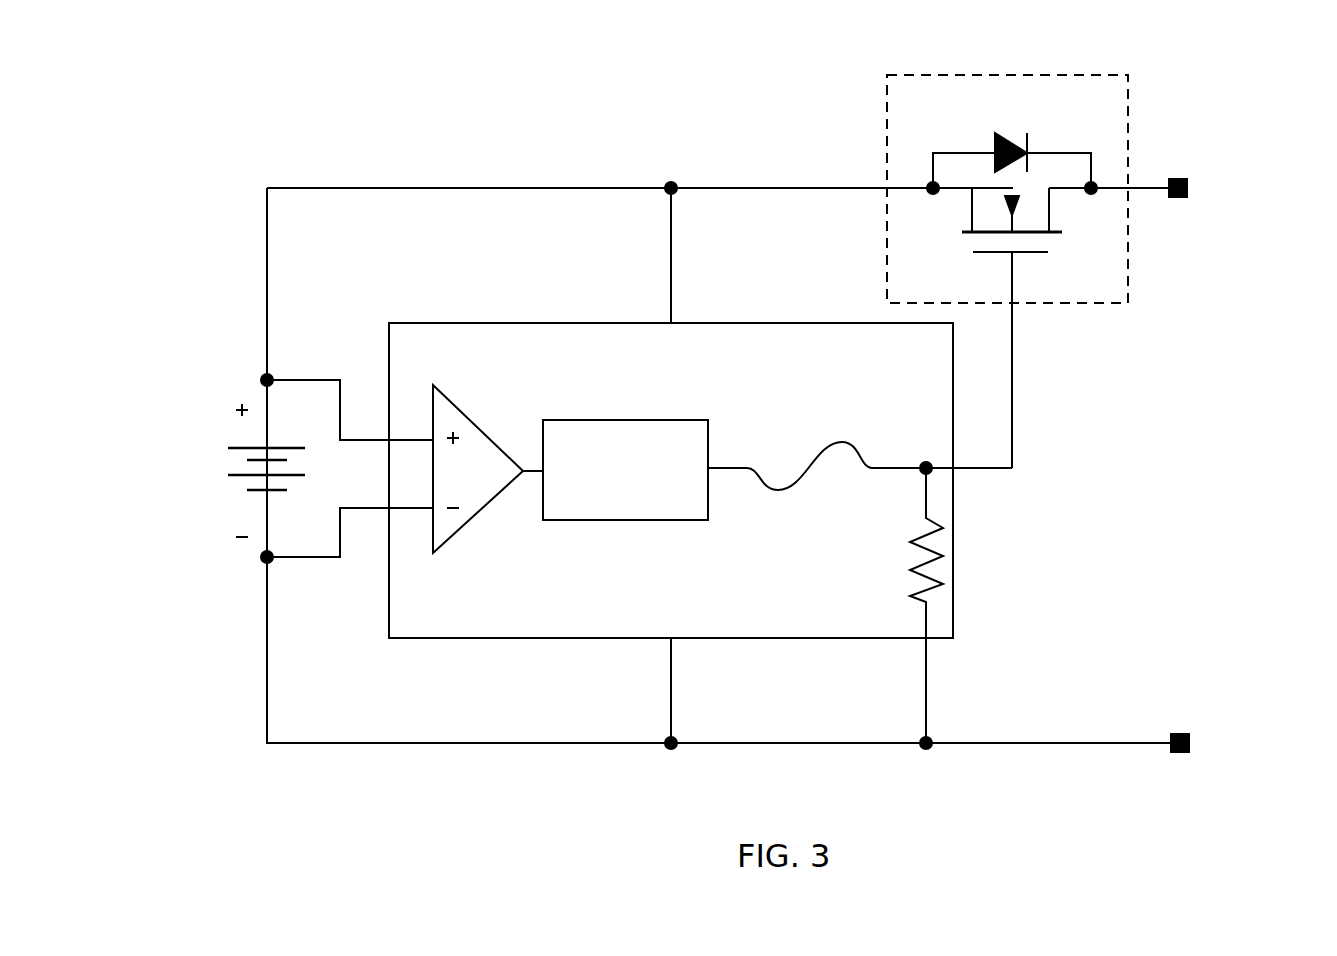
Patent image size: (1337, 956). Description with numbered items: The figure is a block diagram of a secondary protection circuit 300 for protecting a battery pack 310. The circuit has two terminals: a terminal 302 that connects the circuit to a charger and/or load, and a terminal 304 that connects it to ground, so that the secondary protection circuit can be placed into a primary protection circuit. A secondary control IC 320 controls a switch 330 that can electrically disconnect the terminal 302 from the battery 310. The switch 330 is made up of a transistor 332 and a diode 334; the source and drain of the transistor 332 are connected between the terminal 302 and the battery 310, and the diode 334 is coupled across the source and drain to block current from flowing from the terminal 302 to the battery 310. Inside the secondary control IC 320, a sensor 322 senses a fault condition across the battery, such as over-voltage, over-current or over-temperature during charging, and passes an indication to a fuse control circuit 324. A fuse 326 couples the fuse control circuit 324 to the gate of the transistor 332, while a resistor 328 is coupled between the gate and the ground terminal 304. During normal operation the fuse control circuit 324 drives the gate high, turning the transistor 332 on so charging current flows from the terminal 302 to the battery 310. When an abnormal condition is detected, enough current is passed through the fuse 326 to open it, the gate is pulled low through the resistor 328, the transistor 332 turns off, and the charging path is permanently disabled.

The secondary protection circuit 300 is at (716, 424).
The terminal 302 is at (1183, 200).
The terminal 304 is at (1178, 735).
The battery pack 310 is at (238, 448).
The secondary control IC 320 is at (671, 480).
The sensor 322 is at (476, 425).
The fuse control circuit 324 is at (625, 470).
The fuse 326 is at (826, 445).
The resistor 328 is at (914, 580).
The switch 330 is at (887, 92).
The transistor 332 is at (1035, 252).
The diode 334 is at (997, 140).